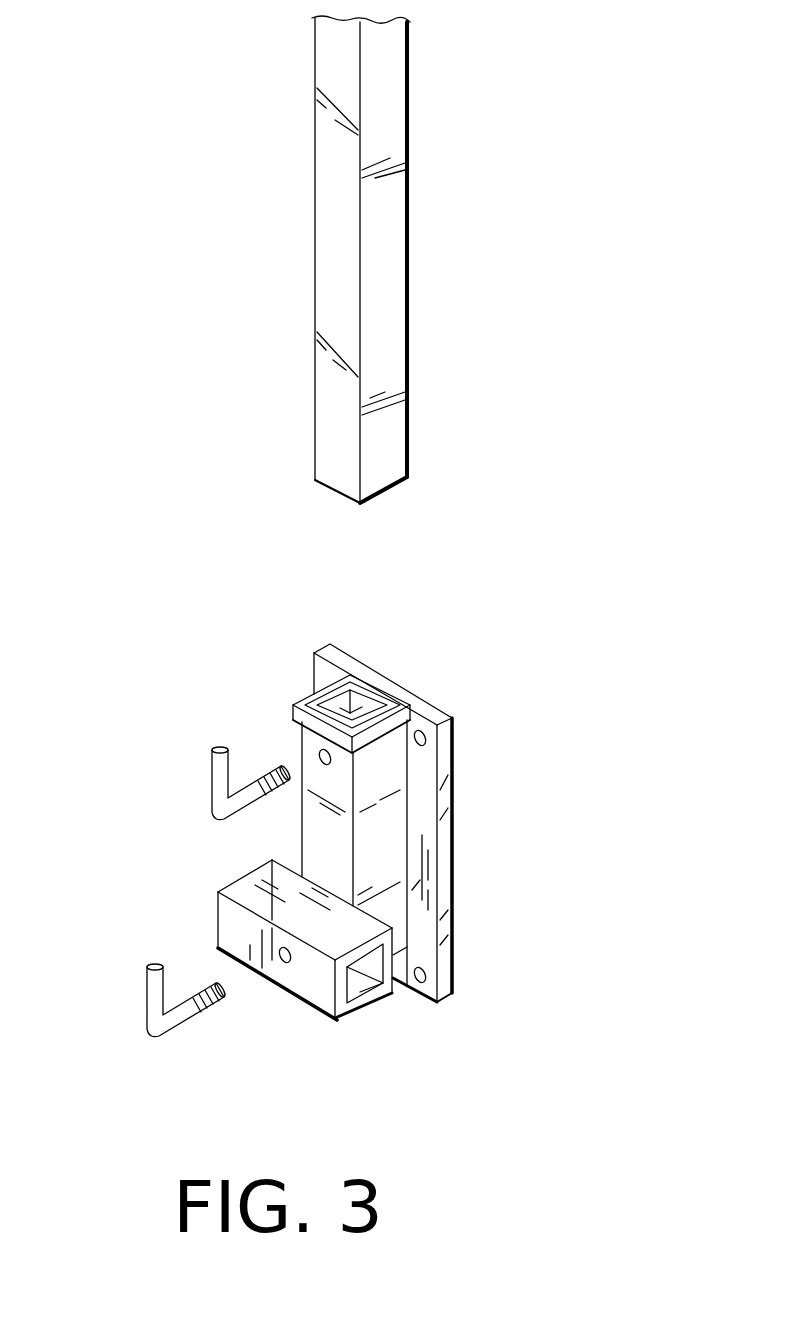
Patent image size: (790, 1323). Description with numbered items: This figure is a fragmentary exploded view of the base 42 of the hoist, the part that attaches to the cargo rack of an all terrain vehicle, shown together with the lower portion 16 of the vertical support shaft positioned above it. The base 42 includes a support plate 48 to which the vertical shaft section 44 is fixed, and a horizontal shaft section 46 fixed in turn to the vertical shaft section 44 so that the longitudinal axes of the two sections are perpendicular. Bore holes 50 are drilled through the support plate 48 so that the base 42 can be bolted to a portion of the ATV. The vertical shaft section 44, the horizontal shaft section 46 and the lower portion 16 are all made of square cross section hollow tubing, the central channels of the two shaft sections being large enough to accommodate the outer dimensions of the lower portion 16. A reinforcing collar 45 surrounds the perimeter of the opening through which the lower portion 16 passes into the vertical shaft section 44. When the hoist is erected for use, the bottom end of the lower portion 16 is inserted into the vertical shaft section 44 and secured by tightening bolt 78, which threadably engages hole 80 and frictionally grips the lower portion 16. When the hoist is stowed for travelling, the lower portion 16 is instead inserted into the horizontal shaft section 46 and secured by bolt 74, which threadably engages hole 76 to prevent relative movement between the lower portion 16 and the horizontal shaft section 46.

The lower portion 16 is at (397, 350).
The base 42 is at (507, 872).
The vertical shaft section 44 is at (392, 820).
The reinforcing collar 45 is at (293, 700).
The horizontal shaft section 46 is at (325, 1012).
The support plate 48 is at (443, 918).
The bore holes 50 is at (425, 737).
The bolt 74 is at (148, 1023).
The hole 76 is at (282, 962).
The bolt 78 is at (217, 792).
The hole 80 is at (320, 755).